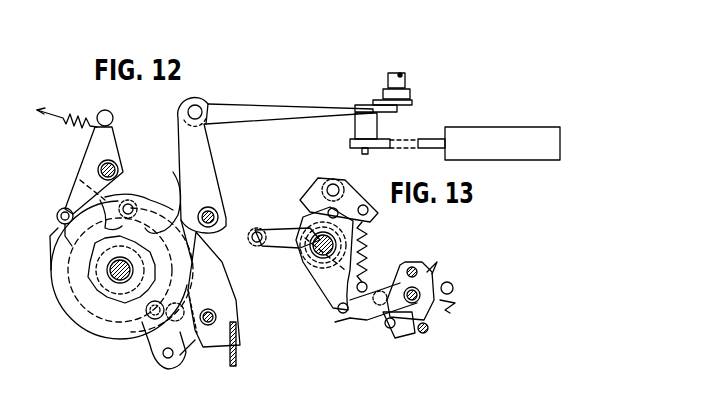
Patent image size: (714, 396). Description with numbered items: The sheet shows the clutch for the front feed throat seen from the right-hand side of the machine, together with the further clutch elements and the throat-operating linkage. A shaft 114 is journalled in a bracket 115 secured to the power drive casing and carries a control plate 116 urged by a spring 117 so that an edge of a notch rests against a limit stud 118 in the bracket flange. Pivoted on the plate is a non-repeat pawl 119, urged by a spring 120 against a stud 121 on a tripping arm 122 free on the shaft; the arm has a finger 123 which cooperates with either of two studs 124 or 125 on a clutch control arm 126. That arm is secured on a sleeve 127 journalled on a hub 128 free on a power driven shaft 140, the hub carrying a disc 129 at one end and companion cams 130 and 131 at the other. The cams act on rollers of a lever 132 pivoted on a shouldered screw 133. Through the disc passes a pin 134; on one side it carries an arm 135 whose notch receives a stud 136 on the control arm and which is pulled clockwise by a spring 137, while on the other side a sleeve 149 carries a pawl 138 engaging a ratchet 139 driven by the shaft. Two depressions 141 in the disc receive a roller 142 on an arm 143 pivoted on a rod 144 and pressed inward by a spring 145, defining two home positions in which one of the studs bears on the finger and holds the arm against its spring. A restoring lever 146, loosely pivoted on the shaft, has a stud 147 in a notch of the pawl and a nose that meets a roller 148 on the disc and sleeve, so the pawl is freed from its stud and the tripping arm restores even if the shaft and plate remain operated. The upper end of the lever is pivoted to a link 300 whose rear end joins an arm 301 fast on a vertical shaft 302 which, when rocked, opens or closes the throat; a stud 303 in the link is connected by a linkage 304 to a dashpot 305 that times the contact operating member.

In FIG. 12, the shaft 114 is at (216, 317).
In FIG. 12, the bracket 115 is at (236, 350).
In FIG. 12, the control plate 116 is at (434, 264).
In FIG. 12, the spring 117 is at (452, 306).
In FIG. 12, the limit stud 118 is at (412, 267).
In FIG. 12, the non-repeat pawl 119 is at (402, 336).
In FIG. 12, the spring 120 is at (378, 310).
In FIG. 12, the stud 121 is at (428, 333).
In FIG. 12, the tripping arm 122 is at (452, 293).
In FIG. 12, the finger 123 is at (350, 325).
In FIG. 12, the stud 124 is at (338, 320).
In FIG. 12, the stud 125 is at (262, 228).
In FIG. 12, the clutch control arm 126 is at (325, 298).
In FIG. 12, the sleeve 127 is at (308, 280).
In FIG. 12, the hub 128 is at (312, 260).
In FIG. 12, the disc 129 is at (62, 306).
In FIG. 12, the cam 130 is at (90, 322).
In FIG. 12, the cam 131 is at (140, 320).
In FIG. 12, the lever 132 is at (207, 175).
In FIG. 12, the shouldered screw 133 is at (210, 207).
In FIG. 12, the pin 134 is at (132, 182).
In FIG. 12, the arm 135 is at (312, 196).
In FIG. 12, the stud 136 is at (305, 212).
In FIG. 12, the spring 137 is at (370, 232).
In FIG. 12, the pawl 138 is at (174, 190).
In FIG. 12, the ratchet 139 is at (107, 263).
In FIG. 12, the power driven shaft 140 is at (112, 282).
In FIG. 12, the depressions 141 is at (215, 250).
In FIG. 12, the roller 142 is at (65, 208).
In FIG. 12, the arm 143 is at (97, 150).
In FIG. 12, the rod 144 is at (118, 166).
In FIG. 12, the spring 145 is at (82, 110).
In FIG. 12, the restoring lever 146 is at (214, 294).
In FIG. 12, the stud 147 is at (185, 360).
In FIG. 12, the roller 148 is at (154, 352).
In FIG. 12, the sleeve 149 is at (80, 180).
In FIG. 12, the link 300 is at (246, 108).
In FIG. 13, the arm 301 is at (412, 103).
In FIG. 13, the vertical shaft 302 is at (406, 80).
In FIG. 13, the stud 303 is at (375, 128).
In FIG. 13, the linkage 304 is at (385, 150).
In FIG. 13, the dashpot 305 is at (500, 130).